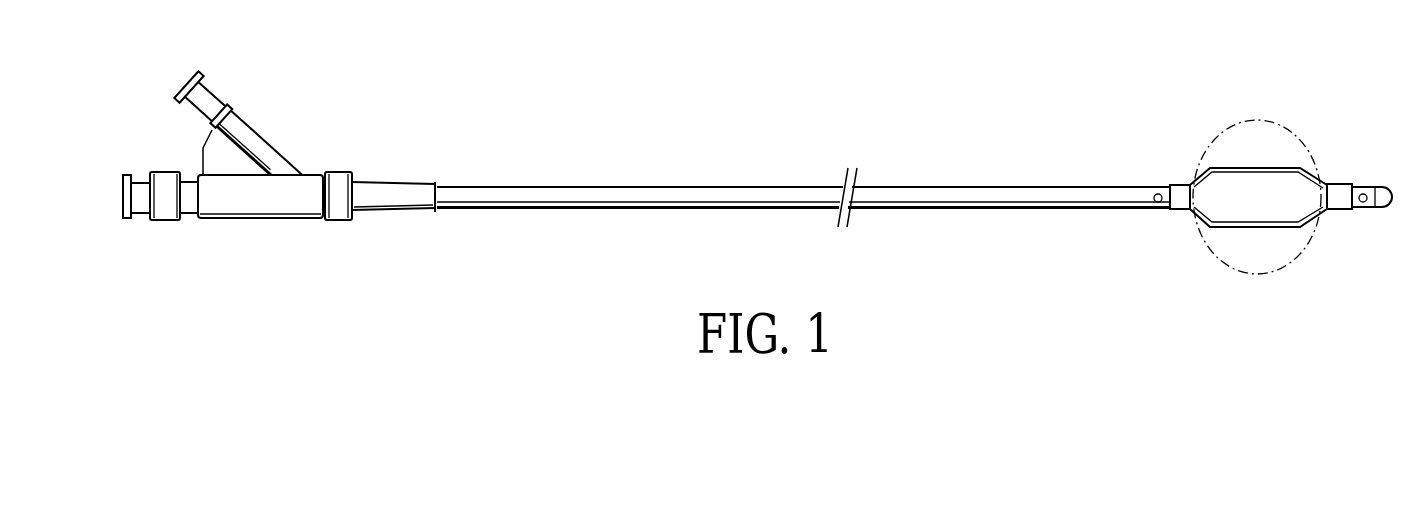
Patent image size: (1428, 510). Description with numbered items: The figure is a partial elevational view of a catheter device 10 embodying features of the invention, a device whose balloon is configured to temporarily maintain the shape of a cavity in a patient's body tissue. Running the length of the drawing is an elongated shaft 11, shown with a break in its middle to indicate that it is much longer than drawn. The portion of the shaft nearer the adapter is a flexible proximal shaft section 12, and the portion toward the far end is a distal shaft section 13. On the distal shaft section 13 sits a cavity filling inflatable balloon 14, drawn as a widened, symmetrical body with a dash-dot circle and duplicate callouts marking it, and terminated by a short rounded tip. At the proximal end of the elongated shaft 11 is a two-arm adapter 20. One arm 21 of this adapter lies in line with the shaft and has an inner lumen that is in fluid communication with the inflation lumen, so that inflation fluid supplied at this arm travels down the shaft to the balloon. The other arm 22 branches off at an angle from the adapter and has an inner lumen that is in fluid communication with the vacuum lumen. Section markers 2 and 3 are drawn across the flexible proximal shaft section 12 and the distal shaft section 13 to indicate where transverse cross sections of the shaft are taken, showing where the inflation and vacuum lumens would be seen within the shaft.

The catheter device 10 is at (728, 180).
The elongated shaft 11 is at (578, 186).
The flexible proximal shaft section 12 is at (490, 203).
The distal shaft section 13 is at (1020, 210).
The cavity filling inflatable balloon 14 is at (1214, 140).
The two-arm adapter 20 is at (300, 222).
The arm 21 is at (223, 203).
The arm 22 is at (266, 139).
The section line 2- 2 is at (602, 178).
The section line 3- 3 is at (1135, 197).